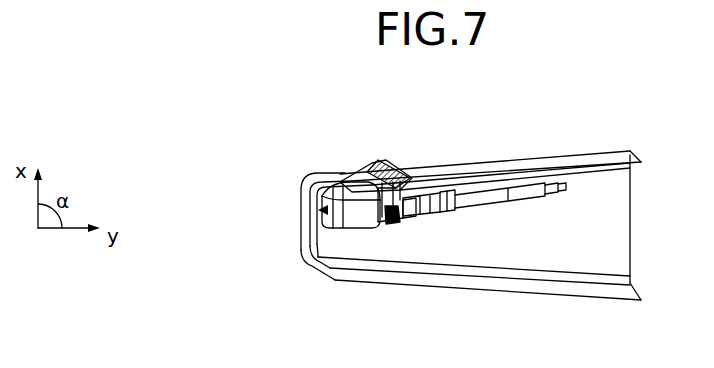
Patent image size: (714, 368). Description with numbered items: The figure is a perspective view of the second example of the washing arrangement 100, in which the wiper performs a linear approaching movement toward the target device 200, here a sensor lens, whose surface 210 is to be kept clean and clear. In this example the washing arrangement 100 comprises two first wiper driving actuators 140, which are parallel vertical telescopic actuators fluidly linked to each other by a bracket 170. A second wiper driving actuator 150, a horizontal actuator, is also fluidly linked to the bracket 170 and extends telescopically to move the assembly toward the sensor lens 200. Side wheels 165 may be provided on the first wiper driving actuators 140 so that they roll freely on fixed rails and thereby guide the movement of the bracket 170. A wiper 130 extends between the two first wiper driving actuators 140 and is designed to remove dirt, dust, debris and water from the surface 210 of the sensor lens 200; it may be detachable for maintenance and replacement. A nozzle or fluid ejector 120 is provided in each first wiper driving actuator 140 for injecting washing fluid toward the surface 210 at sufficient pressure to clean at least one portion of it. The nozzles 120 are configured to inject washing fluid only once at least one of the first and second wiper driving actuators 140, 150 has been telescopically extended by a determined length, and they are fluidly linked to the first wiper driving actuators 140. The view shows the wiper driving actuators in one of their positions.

The washing arrangement 100 is at (276, 164).
The nozzle or fluid ejector 120 is at (377, 164).
The wiper 130 is at (395, 168).
The first wiper driving actuator 140 is at (372, 230).
The second wiper driving actuator 150 is at (531, 174).
The side wheel 165 is at (397, 224).
The bracket 170 is at (413, 226).
The target device 200 is at (312, 214).
The surface 210 is at (352, 180).